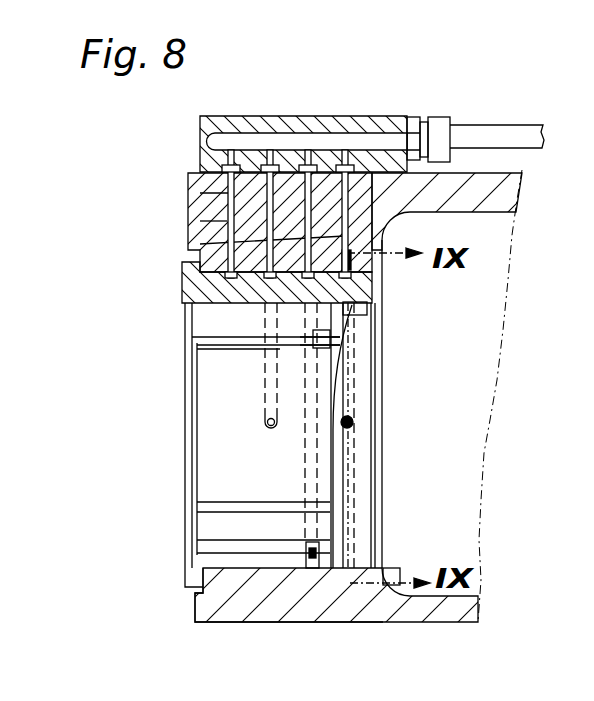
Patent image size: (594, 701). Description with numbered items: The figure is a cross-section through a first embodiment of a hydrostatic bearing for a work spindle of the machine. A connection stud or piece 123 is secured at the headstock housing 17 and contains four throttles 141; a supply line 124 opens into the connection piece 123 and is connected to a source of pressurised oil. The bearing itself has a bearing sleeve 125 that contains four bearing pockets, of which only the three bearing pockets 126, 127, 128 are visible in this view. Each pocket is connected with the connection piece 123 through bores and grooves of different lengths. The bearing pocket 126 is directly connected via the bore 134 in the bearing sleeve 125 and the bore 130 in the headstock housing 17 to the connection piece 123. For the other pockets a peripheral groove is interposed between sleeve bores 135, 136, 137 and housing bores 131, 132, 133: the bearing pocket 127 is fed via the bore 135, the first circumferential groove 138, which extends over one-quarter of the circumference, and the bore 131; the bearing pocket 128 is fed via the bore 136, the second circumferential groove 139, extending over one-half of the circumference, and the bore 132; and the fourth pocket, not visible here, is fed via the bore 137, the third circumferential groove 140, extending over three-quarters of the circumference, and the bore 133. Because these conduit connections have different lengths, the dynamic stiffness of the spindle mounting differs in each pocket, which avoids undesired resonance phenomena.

The headstock housing 17 is at (503, 192).
The connection stud 123 is at (342, 124).
The supply line 124 is at (471, 132).
The bearing sleeve 125 is at (205, 557).
The bearing pocket 126 is at (213, 323).
The bearing pocket 127 is at (220, 463).
The bearing pocket 128 is at (218, 530).
The bore 130 is at (196, 176).
The bore 131 is at (200, 193).
The bore 132 is at (200, 221).
The bore 133 is at (200, 244).
The bore 134 is at (235, 289).
The bore 135 is at (266, 421).
The bore 136 is at (340, 550).
The bore 137 is at (350, 420).
The circumferential groove 138 is at (266, 373).
The circumferential groove 139 is at (316, 312).
The circumferential groove 140 is at (360, 474).
The throttles 141 is at (343, 152).